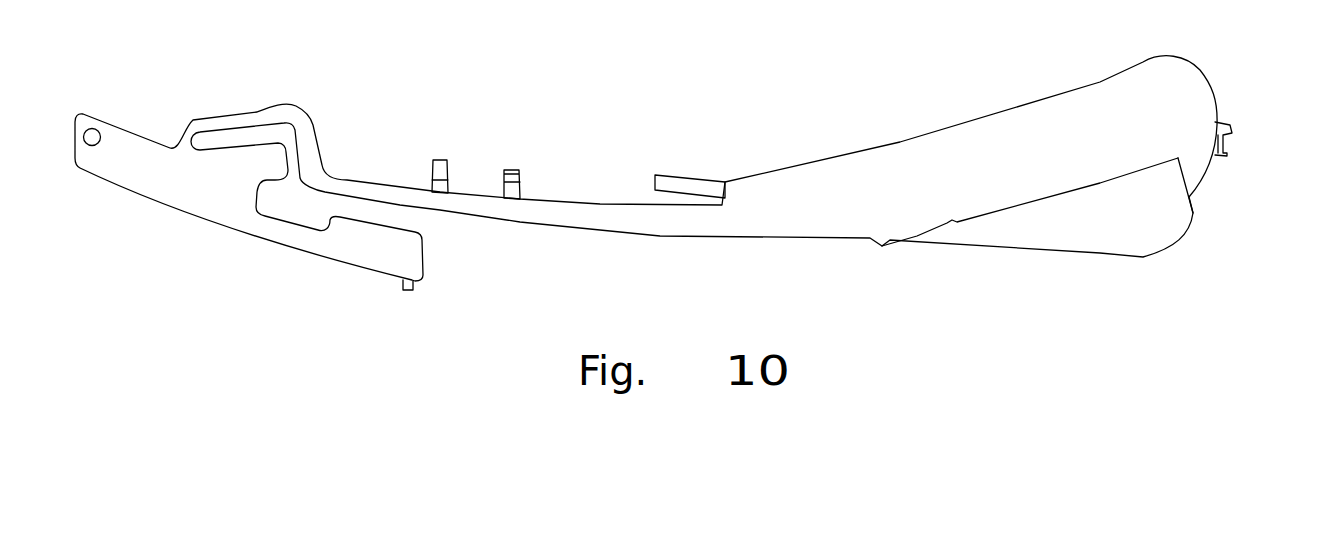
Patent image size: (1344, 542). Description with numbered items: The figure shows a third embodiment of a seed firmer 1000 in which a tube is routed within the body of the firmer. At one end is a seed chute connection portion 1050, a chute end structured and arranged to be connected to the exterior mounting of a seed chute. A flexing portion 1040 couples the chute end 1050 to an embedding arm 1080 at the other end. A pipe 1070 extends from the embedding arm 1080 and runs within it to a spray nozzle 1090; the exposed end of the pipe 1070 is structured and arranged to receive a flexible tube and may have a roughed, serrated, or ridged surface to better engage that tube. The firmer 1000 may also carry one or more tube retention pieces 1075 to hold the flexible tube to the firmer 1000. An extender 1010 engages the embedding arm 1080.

The firmer 1000 is at (707, 167).
The extender 1010 is at (1077, 245).
The flexing portion 1040 is at (570, 222).
The seed chute connection portion 1050 is at (217, 208).
The pipe 1070 is at (693, 187).
The tube retention piece 1075 is at (510, 168).
The embedding arm 1080 is at (1098, 113).
The spray nozzle 1090 is at (1233, 133).